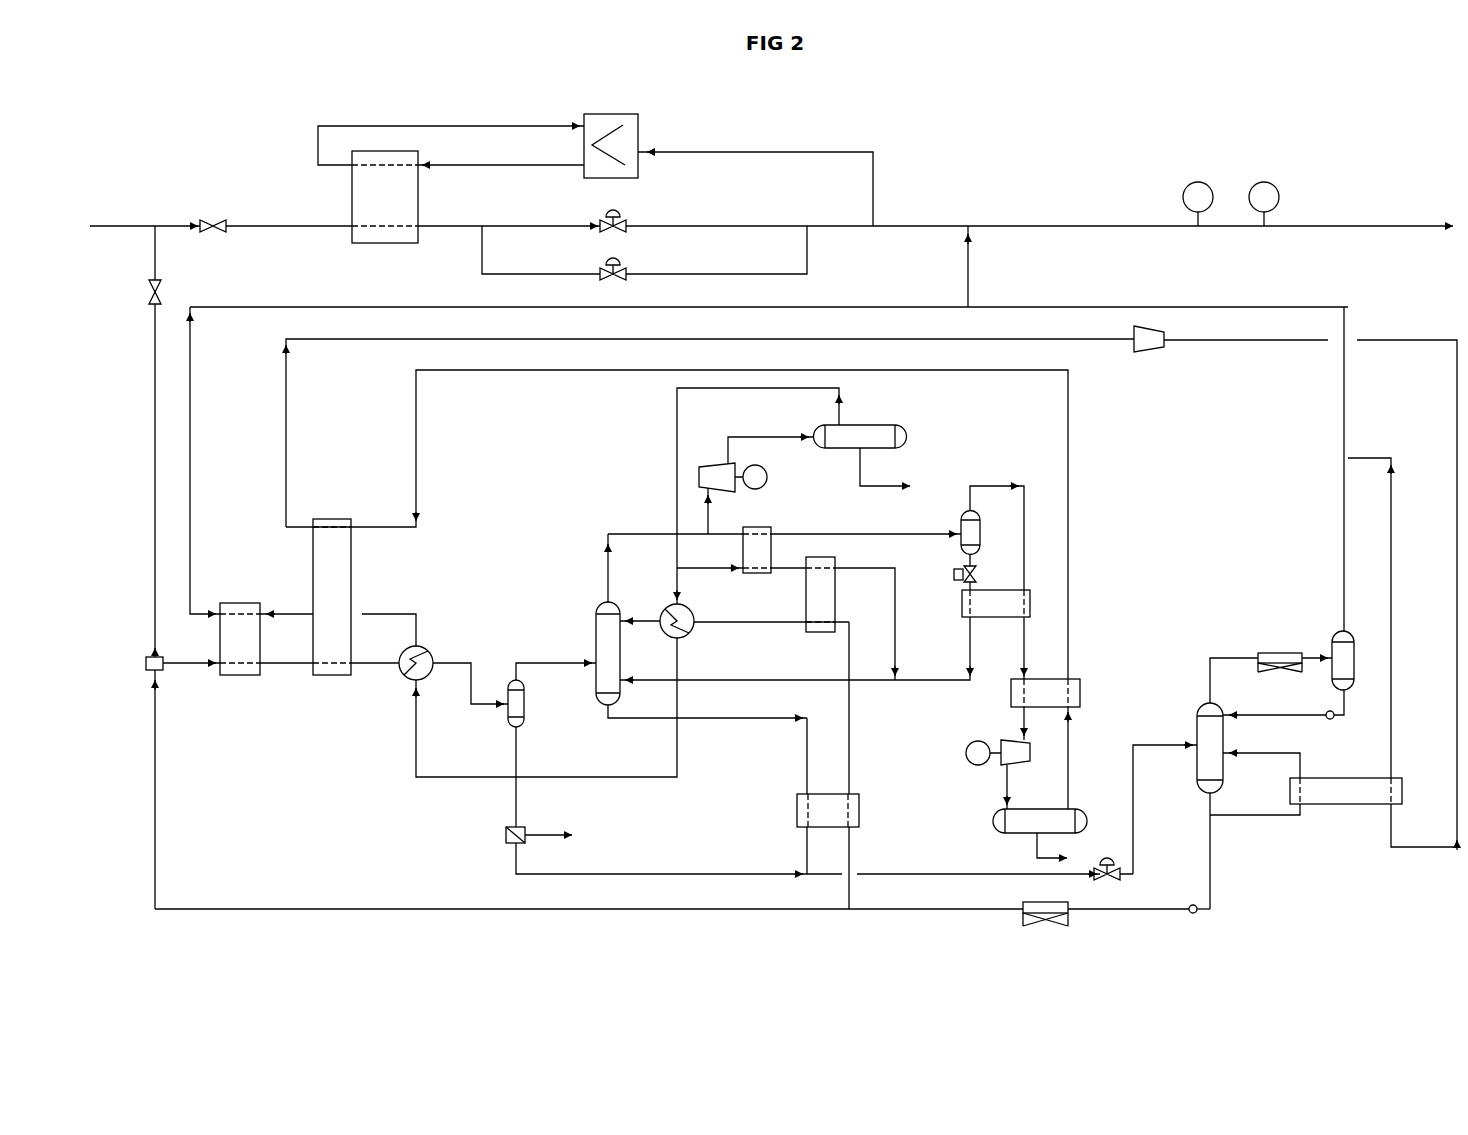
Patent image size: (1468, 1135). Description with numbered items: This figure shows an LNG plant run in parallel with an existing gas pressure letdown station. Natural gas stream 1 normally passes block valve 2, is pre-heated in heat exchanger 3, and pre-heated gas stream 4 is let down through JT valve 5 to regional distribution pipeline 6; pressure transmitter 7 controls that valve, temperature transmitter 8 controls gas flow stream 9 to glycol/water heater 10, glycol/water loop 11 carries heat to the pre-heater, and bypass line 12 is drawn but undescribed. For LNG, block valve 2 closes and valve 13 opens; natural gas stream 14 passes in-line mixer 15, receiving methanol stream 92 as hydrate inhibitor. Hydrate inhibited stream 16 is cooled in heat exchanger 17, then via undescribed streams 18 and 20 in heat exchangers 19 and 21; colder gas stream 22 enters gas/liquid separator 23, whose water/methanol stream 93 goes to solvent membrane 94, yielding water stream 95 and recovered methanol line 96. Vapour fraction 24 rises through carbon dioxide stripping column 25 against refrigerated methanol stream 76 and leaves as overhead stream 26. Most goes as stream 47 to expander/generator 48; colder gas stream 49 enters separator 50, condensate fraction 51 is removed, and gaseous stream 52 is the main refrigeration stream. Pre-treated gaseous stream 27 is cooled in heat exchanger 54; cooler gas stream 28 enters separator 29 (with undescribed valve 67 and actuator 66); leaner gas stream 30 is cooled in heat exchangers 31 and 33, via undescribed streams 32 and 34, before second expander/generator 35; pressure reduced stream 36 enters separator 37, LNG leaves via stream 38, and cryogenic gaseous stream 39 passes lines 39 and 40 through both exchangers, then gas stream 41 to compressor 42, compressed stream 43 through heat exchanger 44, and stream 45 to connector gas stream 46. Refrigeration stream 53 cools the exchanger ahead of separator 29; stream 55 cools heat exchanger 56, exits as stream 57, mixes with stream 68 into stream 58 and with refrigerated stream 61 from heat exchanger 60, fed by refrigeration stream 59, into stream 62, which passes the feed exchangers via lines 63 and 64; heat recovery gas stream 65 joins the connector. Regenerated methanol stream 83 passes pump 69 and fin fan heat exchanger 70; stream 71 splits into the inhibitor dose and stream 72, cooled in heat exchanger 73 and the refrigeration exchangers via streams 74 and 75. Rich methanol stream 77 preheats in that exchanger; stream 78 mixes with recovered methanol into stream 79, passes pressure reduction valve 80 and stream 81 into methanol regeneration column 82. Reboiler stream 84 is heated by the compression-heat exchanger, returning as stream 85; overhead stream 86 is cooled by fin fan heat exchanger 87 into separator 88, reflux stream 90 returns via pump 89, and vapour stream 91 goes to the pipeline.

The natural gas stream 1 is at (125, 233).
The block valve 2 is at (210, 236).
The heat exchanger 3 is at (372, 253).
The pre-heated gas stream 4 is at (465, 235).
The JT valve 5 is at (598, 219).
The regional distribution pipeline 6 is at (903, 236).
The pressure transmitter 7 is at (1178, 192).
The temperature transmitter 8 is at (1245, 190).
The gas flow stream 9 is at (866, 186).
The glycol/water heater 10 is at (648, 134).
The closed loop recycling glycol/water 11 is at (487, 173).
The bypass line 12 is at (546, 272).
The valve 13 is at (143, 293).
The natural gas stream 14 is at (147, 490).
The in-line mixer 15 is at (141, 668).
The hydrate inhibited stream 16 is at (186, 682).
The heat exchanger 17 is at (233, 684).
The preheated line 18 is at (283, 683).
The heat exchanger 19 is at (316, 684).
The outlet line 20 is at (372, 668).
The heat exchanger 21 is at (405, 678).
The colder gas stream 22 is at (458, 680).
The gas/liquid separator 23 is at (500, 720).
The vapour fraction 24 is at (520, 653).
The carbon dioxide stripping column 25 is at (588, 690).
The overhead stream 26 is at (603, 586).
The pre-treated gaseous stream 27 is at (728, 540).
The cooler gas stream 28 is at (845, 530).
The separator 29 is at (983, 540).
The leaner gas stream 30 is at (1002, 482).
The heat exchanger 31 is at (1033, 600).
The cooled gas line 32 is at (1030, 642).
The heat exchanger 33 is at (1005, 706).
The expander inlet line 34 is at (1030, 730).
The second gas expander/generator 35 is at (1020, 768).
The pressure reduced stream 36 is at (1003, 778).
The separator 37 is at (985, 826).
The stream 38 is at (1030, 846).
The cryogenic gaseous stream 39 is at (1077, 763).
The line 40 is at (1078, 490).
The gas stream 41 is at (296, 397).
The compressor 42 is at (1145, 364).
The compressed and heated gas stream 43 is at (1448, 388).
The heat exchanger 44 is at (1410, 778).
The stream 45 is at (1403, 652).
The connector gas stream 46 is at (976, 270).
The stream 47 is at (716, 516).
The pressure reducing gas expander/generator 48 is at (713, 460).
The colder gas stream 49 is at (745, 434).
The separator 50 is at (880, 418).
The condensate fraction 51 is at (854, 466).
The gaseous stream 52 is at (670, 426).
The natural gas refrigeration stream 53 is at (693, 578).
The heat exchanger 54 is at (752, 585).
The natural gas refrigeration stream 55 is at (790, 578).
The heat exchanger 56 is at (844, 590).
The stream 57 is at (905, 625).
The stream 58 is at (880, 696).
The natural gas refrigeration stream 59 is at (670, 578).
The heat exchanger 60 is at (697, 643).
The refrigerated stream 61 is at (668, 658).
The natural gas refrigeration stream 62 is at (690, 758).
The line 63 is at (426, 625).
The line 64 is at (288, 605).
The heat recovery gas stream 65 is at (200, 497).
The valve actuator 66 is at (948, 572).
The control valve 67 is at (980, 582).
The stream 68 is at (962, 638).
The pump 69 is at (1185, 922).
The ambient air fin fan heat exchanger 70 is at (1016, 925).
The regenerated pre-cooled methanol stream 71 is at (915, 913).
The regenerated methanol stream 72 is at (862, 860).
The heat exchanger 73 is at (865, 812).
The stream 74 is at (860, 774).
The stream 75 is at (795, 636).
The refrigerated methanol stream 76 is at (642, 614).
The rich methanol stream 77 is at (800, 745).
The preheated rich methanol stream 78 is at (800, 858).
The methanol rich stream 79 is at (893, 870).
The pressure reduction valve 80 is at (1108, 855).
The stream 81 is at (1147, 735).
The methanol regeneration column 82 is at (1188, 775).
The regenerated methanol stream 83 is at (1200, 815).
The reboiler stream 84 is at (1236, 817).
The stream 85 is at (1270, 752).
The overhead stream 86 is at (1215, 652).
The ambient air fin fan heat exchanger 87 is at (1268, 652).
The separator 88 is at (1332, 623).
The pump 89 is at (1332, 722).
The reflux stream 90 is at (1255, 710).
The vapour stream 91 is at (1330, 486).
The methanol stream 92 is at (162, 797).
The stream 93 is at (524, 765).
The solvent membrane 94 is at (502, 836).
The water stream 95 is at (548, 835).
The line 96 is at (690, 868).